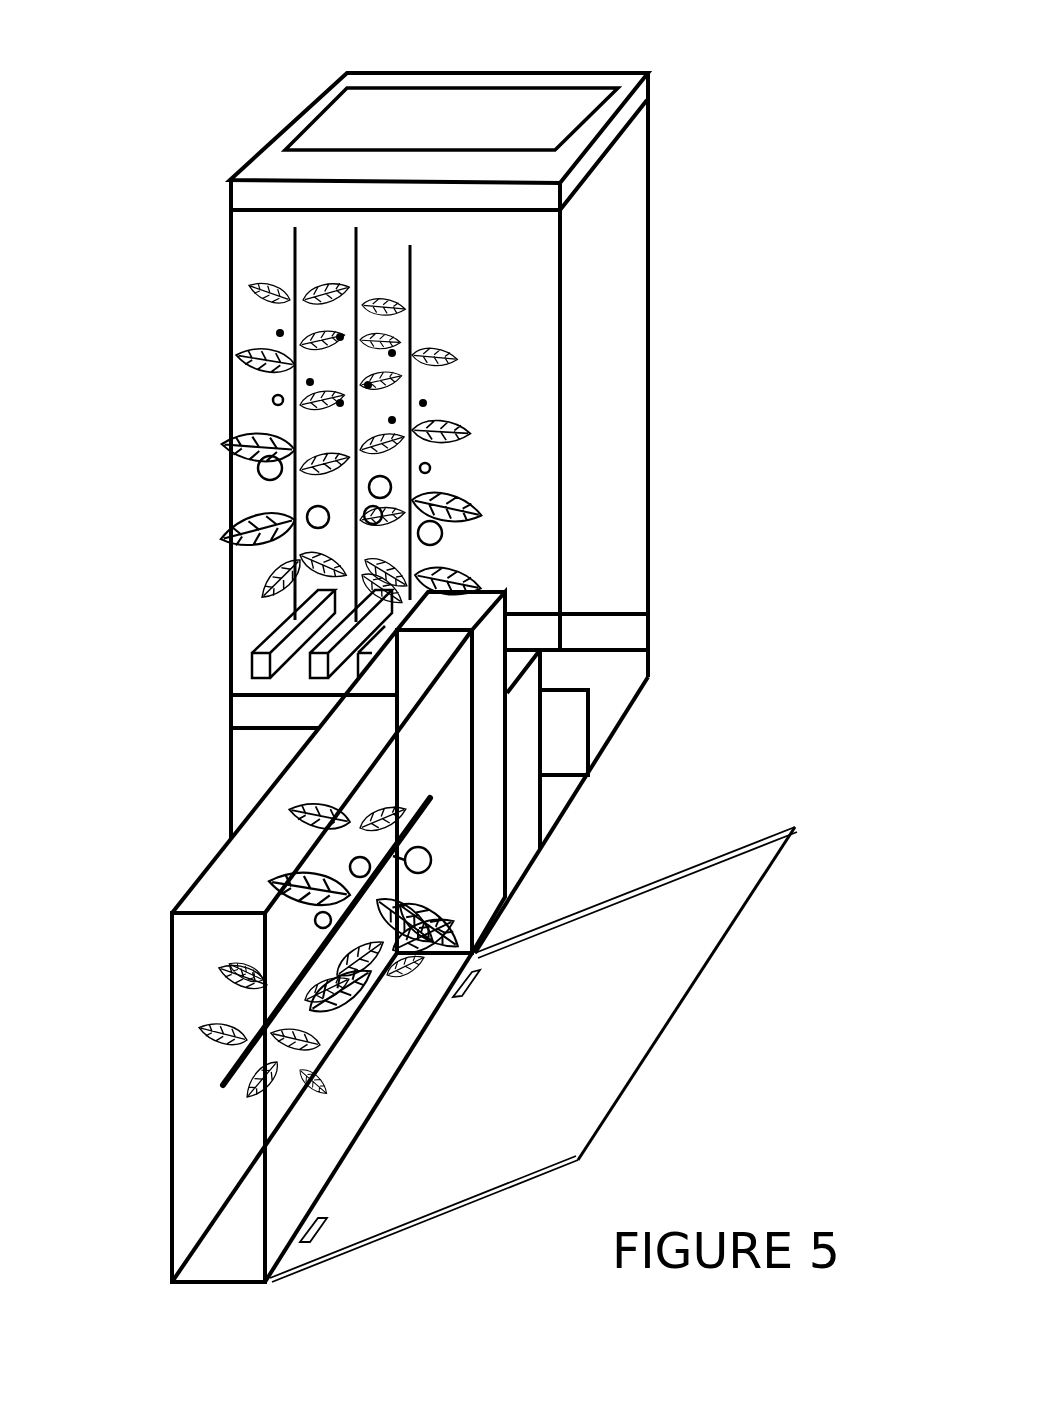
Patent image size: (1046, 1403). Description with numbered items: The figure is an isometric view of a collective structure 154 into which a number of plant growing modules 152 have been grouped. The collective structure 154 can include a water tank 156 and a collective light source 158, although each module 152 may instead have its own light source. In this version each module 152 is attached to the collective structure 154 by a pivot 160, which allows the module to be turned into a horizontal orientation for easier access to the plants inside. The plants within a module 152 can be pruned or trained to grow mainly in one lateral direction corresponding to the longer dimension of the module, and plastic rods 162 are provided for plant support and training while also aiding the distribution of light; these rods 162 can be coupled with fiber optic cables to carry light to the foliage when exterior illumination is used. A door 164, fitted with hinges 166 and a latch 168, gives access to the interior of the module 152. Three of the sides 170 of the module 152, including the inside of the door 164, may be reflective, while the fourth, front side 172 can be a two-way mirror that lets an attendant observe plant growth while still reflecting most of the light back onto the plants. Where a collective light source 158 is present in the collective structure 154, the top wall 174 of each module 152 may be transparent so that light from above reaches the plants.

The plant growing module 152 is at (182, 856).
The collective structure 154 is at (197, 171).
The water tank 156 is at (618, 698).
The collective light source 158 is at (525, 128).
The pivot 160 is at (545, 867).
The plastic rod 162 is at (420, 828).
The door 164 is at (697, 968).
The hinge 166 is at (318, 1220).
The latch 168 is at (385, 775).
The side 170 is at (212, 910).
The front side 172 is at (250, 328).
The top wall 174 is at (205, 1200).